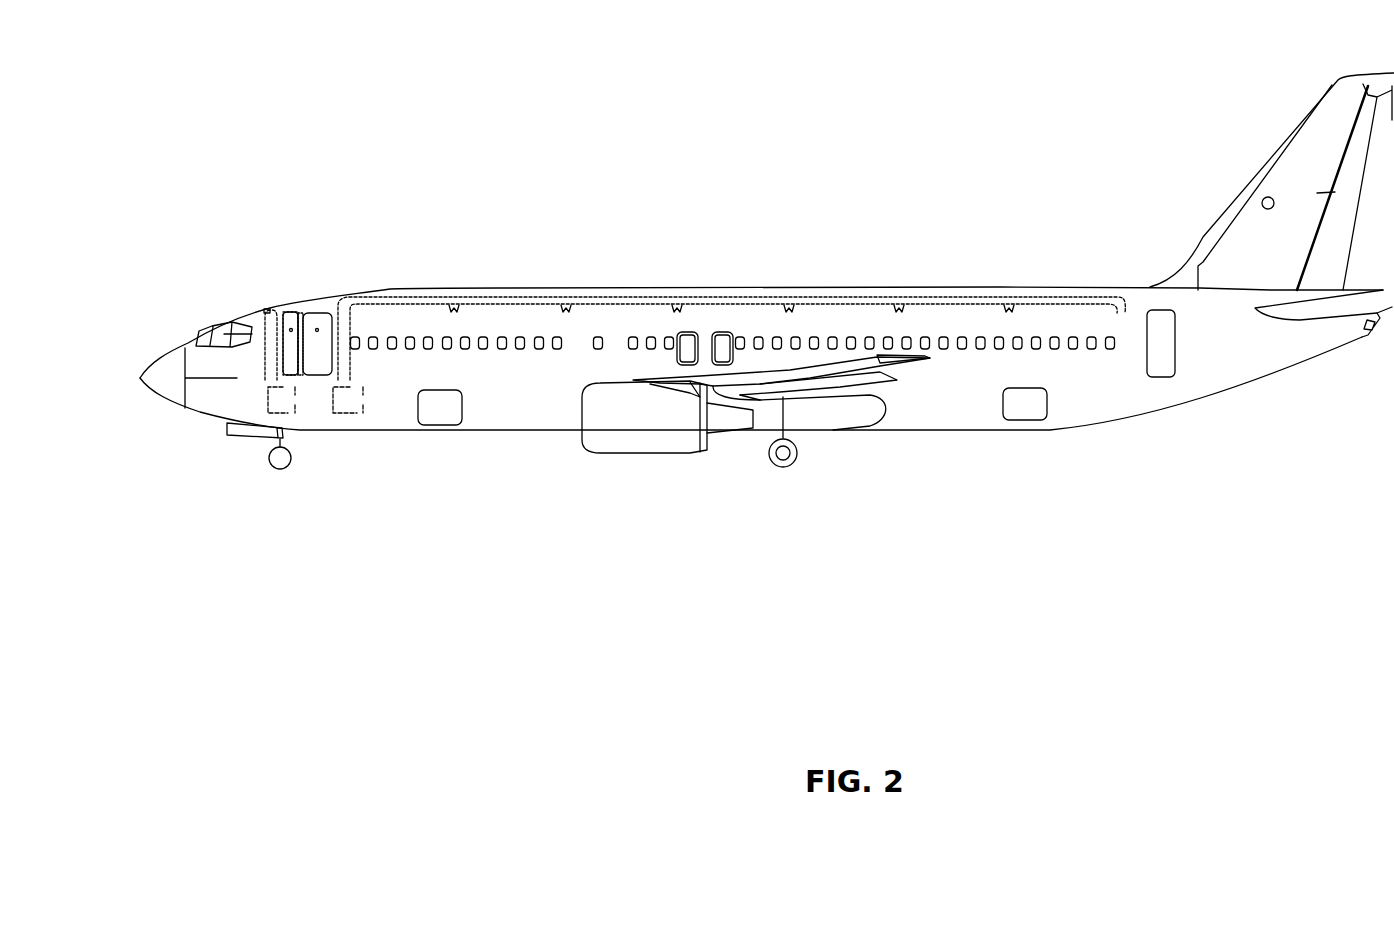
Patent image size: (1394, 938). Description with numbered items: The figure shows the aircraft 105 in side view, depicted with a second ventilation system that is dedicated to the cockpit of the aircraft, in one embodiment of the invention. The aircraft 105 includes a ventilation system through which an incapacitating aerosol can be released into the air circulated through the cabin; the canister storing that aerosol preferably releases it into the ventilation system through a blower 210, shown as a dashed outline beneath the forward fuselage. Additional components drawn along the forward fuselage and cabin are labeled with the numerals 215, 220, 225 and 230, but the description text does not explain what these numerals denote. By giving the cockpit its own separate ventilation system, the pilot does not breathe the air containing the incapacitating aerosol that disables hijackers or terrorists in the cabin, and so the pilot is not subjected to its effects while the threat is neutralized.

The aircraft 105 is at (248, 210).
The blower 210 is at (350, 414).
The cabin wiring / data bus 215 is at (503, 300).
The forward equipment bay 220 is at (270, 413).
The forward entry door area / antenna 225 is at (268, 308).
The forward door / terminal location 230 is at (296, 312).